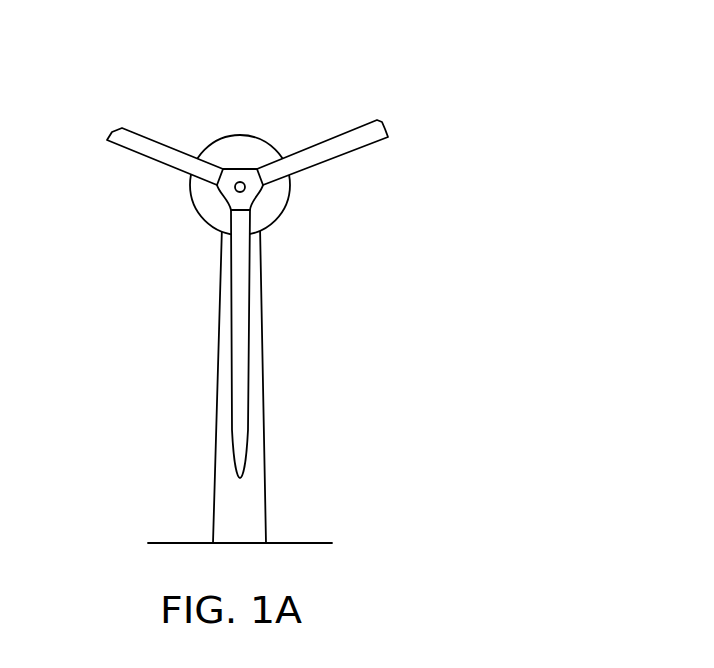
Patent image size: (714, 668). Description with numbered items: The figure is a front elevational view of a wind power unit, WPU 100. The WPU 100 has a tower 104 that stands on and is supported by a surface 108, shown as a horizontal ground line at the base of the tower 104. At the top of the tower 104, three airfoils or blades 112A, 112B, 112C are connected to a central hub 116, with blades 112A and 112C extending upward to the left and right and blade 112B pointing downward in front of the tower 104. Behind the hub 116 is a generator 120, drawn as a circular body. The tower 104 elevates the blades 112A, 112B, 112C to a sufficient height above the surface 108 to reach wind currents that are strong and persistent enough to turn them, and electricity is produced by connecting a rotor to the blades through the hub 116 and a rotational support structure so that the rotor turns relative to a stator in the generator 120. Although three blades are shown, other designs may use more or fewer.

The WPU 100 is at (136, 245).
The tower 104 is at (216, 440).
The surface 108 is at (148, 543).
The blade 112A is at (138, 133).
The blade 112B is at (249, 398).
The blade 112C is at (366, 123).
The hub 116 is at (243, 169).
The generator 120 is at (273, 222).